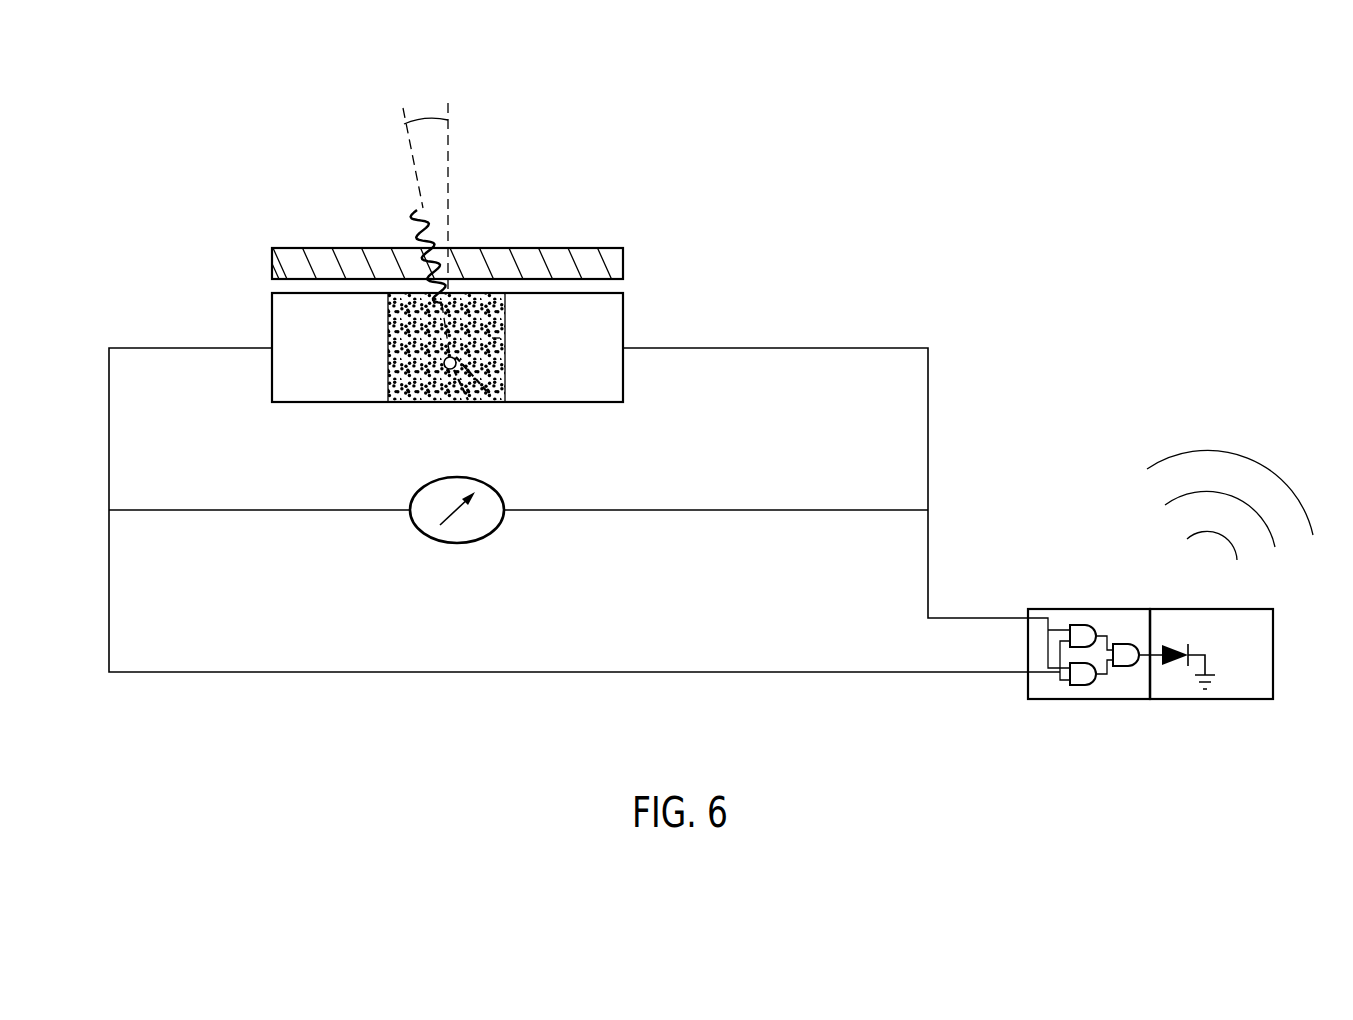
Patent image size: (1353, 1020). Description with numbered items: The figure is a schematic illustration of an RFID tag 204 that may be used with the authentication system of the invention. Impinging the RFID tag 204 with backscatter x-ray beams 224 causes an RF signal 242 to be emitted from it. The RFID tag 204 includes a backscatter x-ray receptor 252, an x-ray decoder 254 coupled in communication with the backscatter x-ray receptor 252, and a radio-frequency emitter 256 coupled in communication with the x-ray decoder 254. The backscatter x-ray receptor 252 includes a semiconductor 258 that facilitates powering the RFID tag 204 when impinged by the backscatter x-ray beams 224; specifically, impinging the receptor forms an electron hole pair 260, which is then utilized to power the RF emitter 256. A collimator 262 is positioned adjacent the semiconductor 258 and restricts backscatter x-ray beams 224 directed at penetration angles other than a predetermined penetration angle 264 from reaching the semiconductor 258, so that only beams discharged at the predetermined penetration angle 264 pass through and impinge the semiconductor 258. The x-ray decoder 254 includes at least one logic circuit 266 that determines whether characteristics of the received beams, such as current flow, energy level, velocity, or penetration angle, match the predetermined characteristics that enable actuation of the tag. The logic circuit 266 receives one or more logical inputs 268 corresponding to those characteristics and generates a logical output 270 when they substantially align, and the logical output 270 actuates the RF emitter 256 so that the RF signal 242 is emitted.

The RFID tag 204 is at (175, 156).
The backscatter x-ray beams 224 is at (416, 226).
The RF signal 242 is at (1273, 428).
The backscatter x-ray receptor 252 is at (535, 261).
The x-ray decoder 254 is at (1069, 640).
The radio-frequency emitter 256 is at (1253, 700).
The semiconductor 258 is at (405, 403).
The electron hole pair 260 is at (465, 403).
The collimator 262 is at (605, 248).
The predetermined penetration angle 264 is at (425, 118).
The logic circuit 266 is at (1118, 644).
The logical inputs 268 is at (993, 672).
The logical output 270 is at (1148, 640).